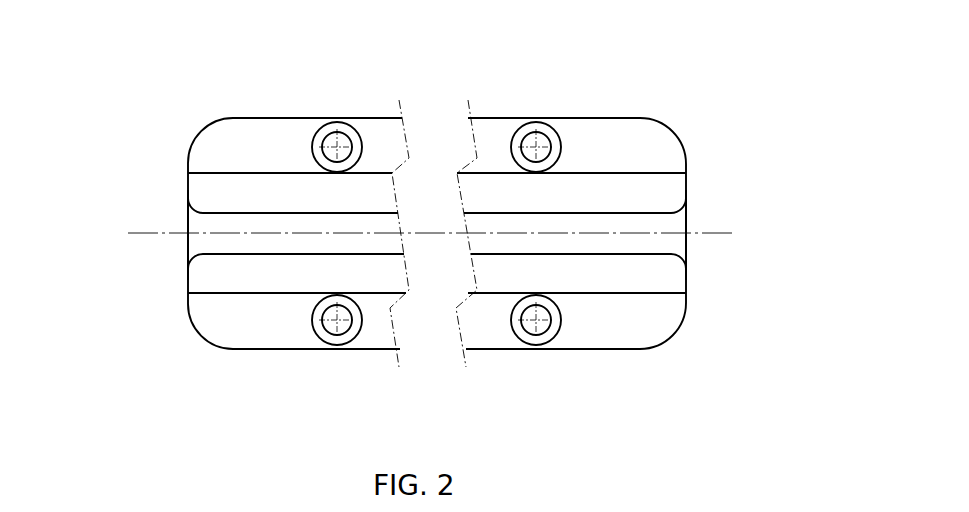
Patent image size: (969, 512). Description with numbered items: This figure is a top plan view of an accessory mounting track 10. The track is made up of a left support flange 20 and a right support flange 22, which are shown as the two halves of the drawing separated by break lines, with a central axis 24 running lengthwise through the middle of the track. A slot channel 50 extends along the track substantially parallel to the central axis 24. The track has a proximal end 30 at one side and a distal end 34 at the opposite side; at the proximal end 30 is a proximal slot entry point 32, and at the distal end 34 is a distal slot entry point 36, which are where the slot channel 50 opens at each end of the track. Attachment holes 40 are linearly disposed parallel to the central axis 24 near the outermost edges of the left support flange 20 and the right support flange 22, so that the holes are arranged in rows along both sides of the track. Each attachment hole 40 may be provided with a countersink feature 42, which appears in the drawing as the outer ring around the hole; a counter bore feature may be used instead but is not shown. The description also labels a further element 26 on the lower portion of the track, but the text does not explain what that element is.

The accessory mounting track 10 is at (725, 77).
The left support flange 20 is at (490, 325).
The right support flange 22 is at (490, 142).
The central axis 24 is at (530, 233).
The lower channel wall 26 is at (609, 245).
The proximal end 30 is at (693, 215).
The proximal slot entry point 32 is at (686, 240).
The distal end 34 is at (178, 214).
The distal slot entry point 36 is at (188, 247).
The attachment holes 40 is at (550, 133).
The countersink feature 42 is at (320, 127).
The slot channel 50 is at (305, 240).